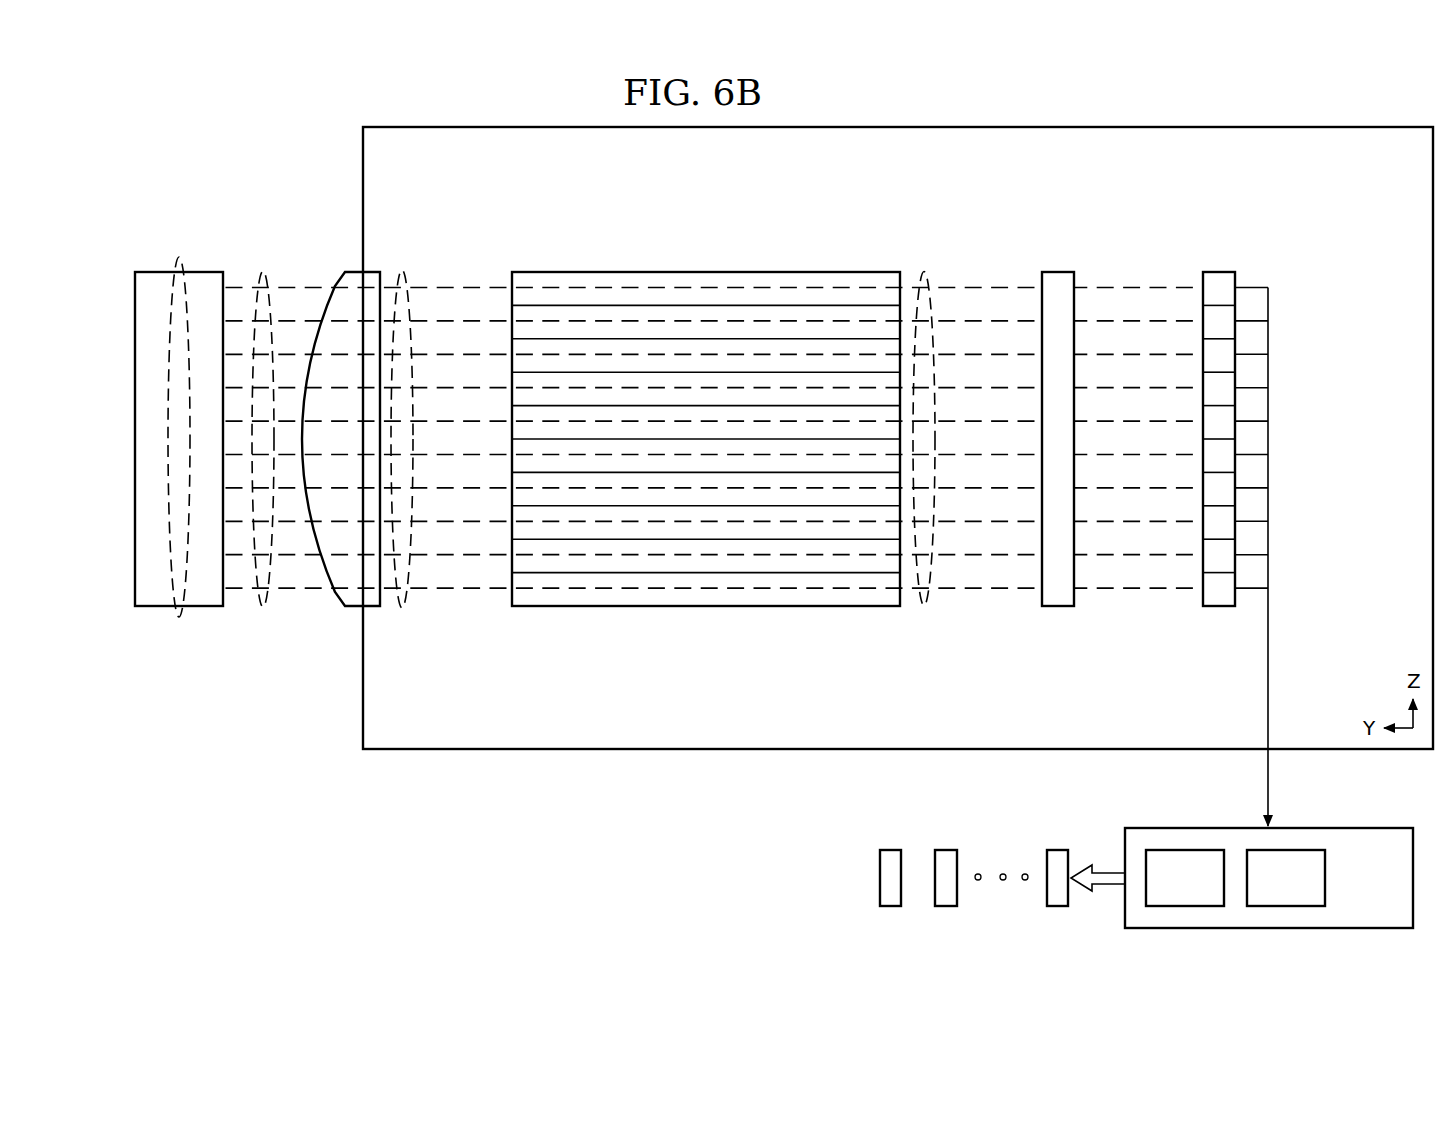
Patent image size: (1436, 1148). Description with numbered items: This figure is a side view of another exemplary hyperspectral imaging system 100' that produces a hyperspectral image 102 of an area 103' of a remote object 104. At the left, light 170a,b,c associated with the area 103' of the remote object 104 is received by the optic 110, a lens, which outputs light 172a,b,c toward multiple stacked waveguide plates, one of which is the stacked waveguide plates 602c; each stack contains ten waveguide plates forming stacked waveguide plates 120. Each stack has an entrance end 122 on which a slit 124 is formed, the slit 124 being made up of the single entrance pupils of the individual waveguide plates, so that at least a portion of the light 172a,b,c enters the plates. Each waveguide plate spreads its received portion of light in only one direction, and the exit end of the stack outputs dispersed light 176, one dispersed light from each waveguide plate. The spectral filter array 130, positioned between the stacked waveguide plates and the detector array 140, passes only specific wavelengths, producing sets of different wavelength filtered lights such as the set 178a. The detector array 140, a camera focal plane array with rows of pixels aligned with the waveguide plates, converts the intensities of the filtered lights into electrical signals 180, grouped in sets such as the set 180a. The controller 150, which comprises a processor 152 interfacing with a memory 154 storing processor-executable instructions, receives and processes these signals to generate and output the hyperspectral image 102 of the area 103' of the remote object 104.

The hyperspectral imaging system 100' is at (898, 395).
The area 103' is at (169, 411).
The remote object 104 is at (166, 628).
The optic 110 is at (340, 276).
The light 170a,b,c is at (263, 608).
The light 172a,b,c is at (403, 270).
The stacked waveguide plates 120 is at (522, 268).
The entrance end 122 is at (508, 608).
The slit 124 is at (443, 188).
The stacked waveguide plates 602c is at (584, 200).
The dispersed light 176 is at (912, 175).
The spectral filter array 130 is at (1055, 272).
The set of different wavelength filtered lights 178a is at (1137, 152).
The detector array 140 is at (1213, 268).
The electrical signals 180 is at (925, 606).
The set of arrays of electrical signals 180a is at (1272, 292).
The controller 150 is at (1390, 892).
The processor 152 is at (1205, 892).
The memory 154 is at (1306, 892).
The hyperspectral image 102 is at (890, 908).